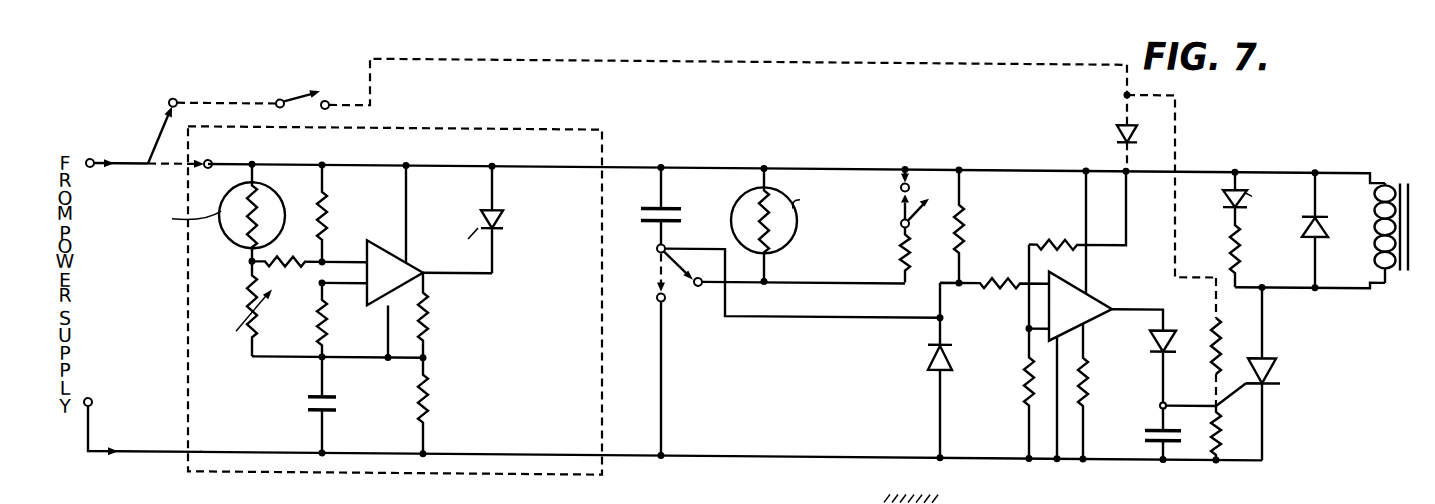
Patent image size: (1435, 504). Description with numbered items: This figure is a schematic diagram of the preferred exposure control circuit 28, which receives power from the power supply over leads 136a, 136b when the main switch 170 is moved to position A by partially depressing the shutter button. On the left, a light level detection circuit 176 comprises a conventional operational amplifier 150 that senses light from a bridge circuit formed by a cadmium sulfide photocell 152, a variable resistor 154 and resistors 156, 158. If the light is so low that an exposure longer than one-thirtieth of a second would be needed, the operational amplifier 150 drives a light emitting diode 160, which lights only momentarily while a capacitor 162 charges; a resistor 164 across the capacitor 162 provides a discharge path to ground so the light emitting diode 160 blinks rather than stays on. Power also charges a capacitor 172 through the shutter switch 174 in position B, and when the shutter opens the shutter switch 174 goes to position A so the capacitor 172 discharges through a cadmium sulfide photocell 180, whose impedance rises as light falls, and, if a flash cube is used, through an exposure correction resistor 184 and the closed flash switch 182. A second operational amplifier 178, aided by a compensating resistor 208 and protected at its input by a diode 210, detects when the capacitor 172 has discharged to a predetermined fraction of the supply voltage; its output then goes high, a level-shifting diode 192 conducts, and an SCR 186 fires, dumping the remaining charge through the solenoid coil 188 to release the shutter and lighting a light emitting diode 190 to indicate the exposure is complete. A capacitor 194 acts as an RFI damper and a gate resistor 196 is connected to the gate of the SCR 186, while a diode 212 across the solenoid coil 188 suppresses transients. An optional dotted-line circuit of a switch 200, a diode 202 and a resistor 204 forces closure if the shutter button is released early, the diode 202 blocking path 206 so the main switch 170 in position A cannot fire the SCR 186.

The exposure control circuit 28 is at (457, 45).
The lead 136a is at (127, 167).
The lead 136b is at (143, 455).
The operational amplifier 150 is at (390, 243).
The cadmium sulfide photocell 152 is at (232, 244).
The variable resistor 154 is at (240, 300).
The resistor 156 is at (318, 322).
The resistor 158 is at (318, 203).
The light emitting diode 160 is at (486, 217).
The capacitor 162 is at (330, 412).
The resistor 164 is at (430, 397).
The main switch 170 is at (150, 139).
The capacitor 172 is at (642, 215).
The shutter switch 174 is at (677, 292).
The light level detection circuit 176 is at (547, 127).
The operational amplifier 178 is at (1097, 289).
The cadmium sulfide photocell 180 is at (784, 236).
The flash switch 182 is at (902, 201).
The exposure correction resistor 184 is at (902, 253).
The SCR 186 is at (1277, 353).
The solenoid coil 188 is at (1389, 170).
The light emitting diode 190 is at (1242, 177).
The diode 192 is at (1151, 338).
The capacitor 194 is at (1152, 438).
The gate resistor 196 is at (1216, 436).
The switch 200 is at (291, 91).
The diode 202 is at (1115, 119).
The resistor 204 is at (1208, 326).
The path 206 is at (1178, 89).
The compensating resistor 208 is at (967, 217).
The diode 210 is at (929, 355).
The diode 212 is at (1327, 222).